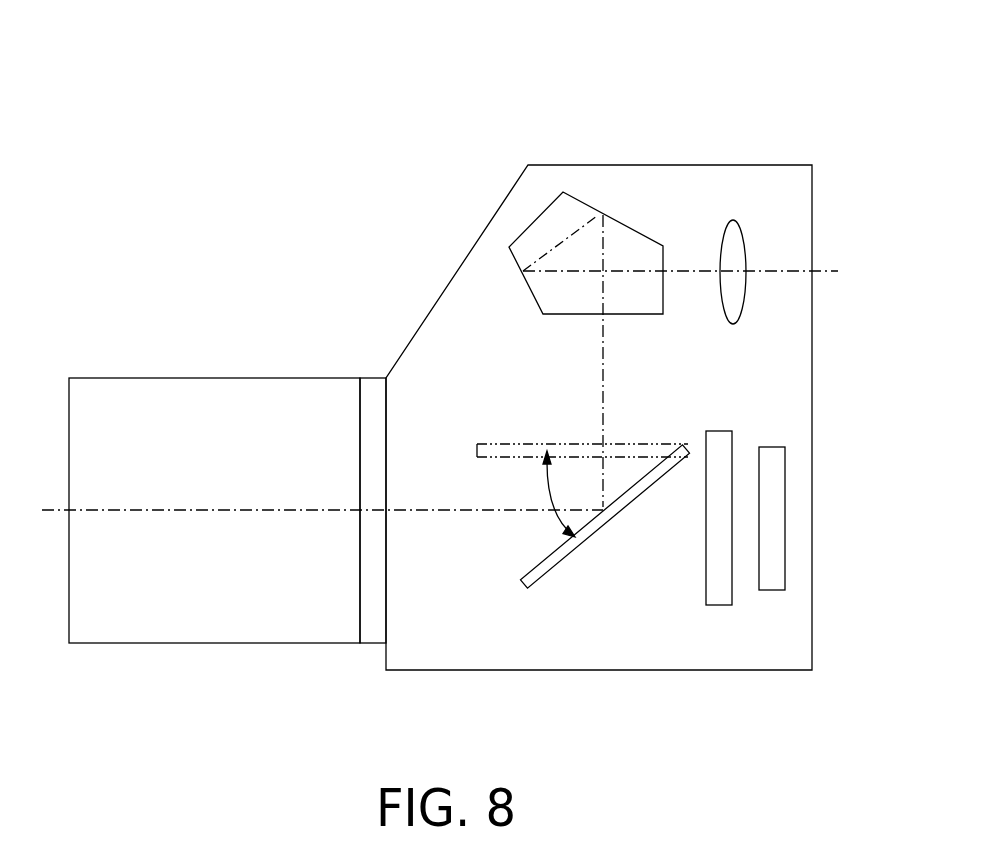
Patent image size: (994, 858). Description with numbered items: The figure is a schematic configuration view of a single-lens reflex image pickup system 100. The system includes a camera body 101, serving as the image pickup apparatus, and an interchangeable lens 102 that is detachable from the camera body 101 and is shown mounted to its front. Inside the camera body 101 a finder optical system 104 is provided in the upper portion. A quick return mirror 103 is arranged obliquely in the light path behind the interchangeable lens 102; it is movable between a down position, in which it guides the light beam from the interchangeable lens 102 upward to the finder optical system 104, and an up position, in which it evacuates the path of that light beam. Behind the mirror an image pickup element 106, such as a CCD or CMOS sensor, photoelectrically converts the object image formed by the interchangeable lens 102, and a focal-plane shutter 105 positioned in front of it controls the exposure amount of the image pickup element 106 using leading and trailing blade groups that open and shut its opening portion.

The single-lens reflex image pickup system 100 is at (671, 87).
The camera body 101 is at (812, 400).
The interchangeable lens 102 is at (212, 378).
The quick return mirror 103 is at (557, 568).
The finder optical system 104 is at (650, 237).
The focal-plane shutter 105 is at (707, 578).
The image pickup element 106 is at (786, 502).